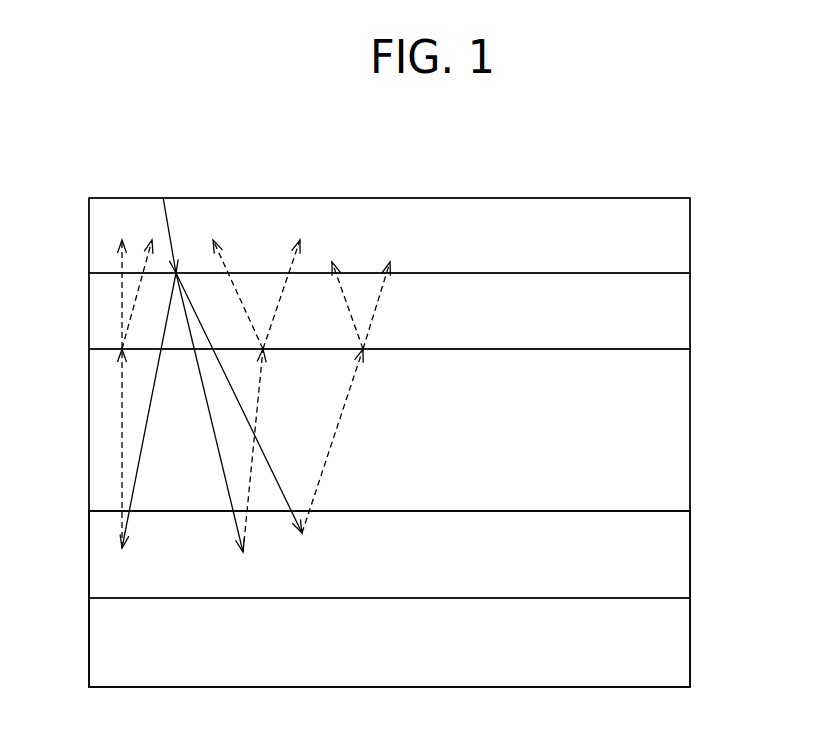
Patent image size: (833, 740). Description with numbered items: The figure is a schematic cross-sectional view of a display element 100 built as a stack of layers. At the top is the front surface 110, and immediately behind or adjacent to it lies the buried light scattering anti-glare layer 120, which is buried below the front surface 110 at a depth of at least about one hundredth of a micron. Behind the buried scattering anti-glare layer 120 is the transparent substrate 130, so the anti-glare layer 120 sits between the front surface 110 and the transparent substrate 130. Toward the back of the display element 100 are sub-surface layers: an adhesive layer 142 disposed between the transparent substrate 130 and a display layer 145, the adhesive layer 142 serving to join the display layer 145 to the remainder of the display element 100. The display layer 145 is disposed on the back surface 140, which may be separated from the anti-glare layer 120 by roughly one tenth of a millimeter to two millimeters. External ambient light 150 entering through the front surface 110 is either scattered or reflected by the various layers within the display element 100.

The display element 100 is at (408, 152).
The front surface 110 is at (389, 235).
The buried light scattering anti-glare layer 120 is at (389, 311).
The transparent substrate 130 is at (389, 430).
The back surface 140 is at (700, 511).
The adhesive layer 142 is at (389, 554).
The display layer 145 is at (389, 642).
The external ambient light 150 is at (163, 197).